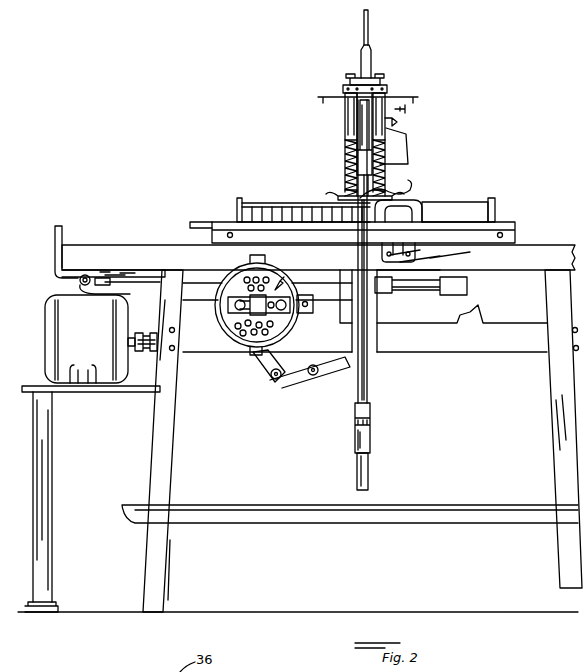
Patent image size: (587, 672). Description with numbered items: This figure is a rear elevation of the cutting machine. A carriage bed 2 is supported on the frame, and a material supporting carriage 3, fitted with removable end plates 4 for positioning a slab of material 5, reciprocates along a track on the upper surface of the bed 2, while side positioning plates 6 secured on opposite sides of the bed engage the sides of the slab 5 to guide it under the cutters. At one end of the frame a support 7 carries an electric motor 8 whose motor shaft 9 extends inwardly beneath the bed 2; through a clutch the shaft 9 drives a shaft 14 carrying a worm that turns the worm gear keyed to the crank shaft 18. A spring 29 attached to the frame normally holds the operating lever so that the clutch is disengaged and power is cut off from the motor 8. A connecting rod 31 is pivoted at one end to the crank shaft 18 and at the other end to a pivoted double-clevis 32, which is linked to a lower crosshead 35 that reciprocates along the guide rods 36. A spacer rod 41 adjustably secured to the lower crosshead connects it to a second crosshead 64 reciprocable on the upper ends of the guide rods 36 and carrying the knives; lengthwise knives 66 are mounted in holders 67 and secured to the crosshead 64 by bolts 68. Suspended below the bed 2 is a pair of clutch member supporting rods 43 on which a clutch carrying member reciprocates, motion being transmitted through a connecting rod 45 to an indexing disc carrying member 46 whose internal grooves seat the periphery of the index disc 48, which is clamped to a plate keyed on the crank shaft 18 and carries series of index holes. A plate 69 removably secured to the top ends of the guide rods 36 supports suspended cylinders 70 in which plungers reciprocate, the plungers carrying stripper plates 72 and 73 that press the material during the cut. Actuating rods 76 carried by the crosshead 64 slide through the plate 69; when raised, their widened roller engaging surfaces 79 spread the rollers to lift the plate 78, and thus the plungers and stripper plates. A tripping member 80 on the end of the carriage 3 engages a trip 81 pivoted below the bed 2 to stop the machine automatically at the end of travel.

The carriage bed 2 is at (550, 252).
The material supporting carriage 3 is at (363, 232).
The removable end plates 4 is at (237, 212).
The slab of material 5 is at (456, 206).
The material side positioning plates 6 is at (425, 206).
The support 7 is at (34, 386).
The electric motor 8 is at (58, 318).
The motor shaft 9 is at (152, 350).
The shaft 14 is at (370, 92).
The crank shaft 18 is at (230, 306).
The spring 29 is at (131, 270).
The connecting rod 31 is at (262, 368).
The double-clevis 32 is at (338, 372).
The lower crosshead 35 is at (355, 450).
The guide rods 36 is at (368, 470).
The spacer rod 41 is at (368, 382).
The clutch member supporting rods 43 is at (420, 288).
The connecting rod 45 is at (327, 310).
The indexing disc carrying member 46 is at (218, 280).
The index disc 48 is at (275, 278).
The second crosshead 64 is at (365, 134).
The knives 66 is at (398, 150).
The holders 67 is at (400, 123).
The bolts 68 is at (406, 110).
The plate 69 is at (384, 88).
The cylinders 70 is at (345, 120).
The stripper plate 72 is at (398, 197).
The stripper plate 73 is at (338, 196).
The actuating rods 76 is at (370, 27).
The plate 78 is at (348, 81).
The roller engaging surfaces 79 is at (372, 54).
The tripping member 80 is at (195, 225).
The trip 81 is at (62, 238).